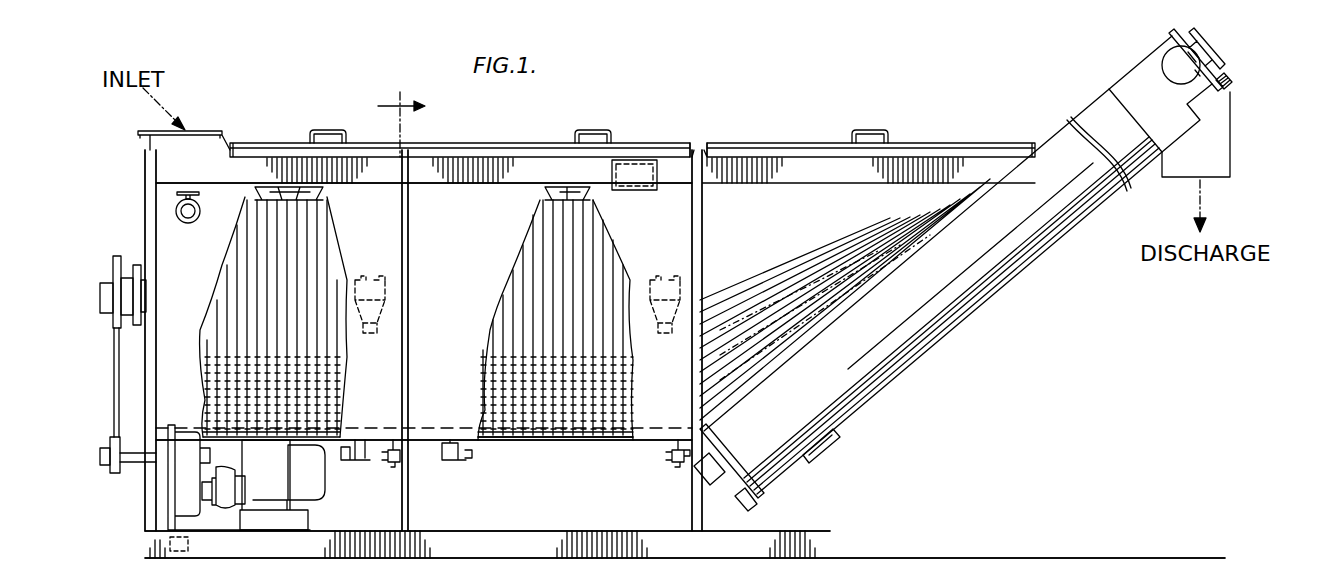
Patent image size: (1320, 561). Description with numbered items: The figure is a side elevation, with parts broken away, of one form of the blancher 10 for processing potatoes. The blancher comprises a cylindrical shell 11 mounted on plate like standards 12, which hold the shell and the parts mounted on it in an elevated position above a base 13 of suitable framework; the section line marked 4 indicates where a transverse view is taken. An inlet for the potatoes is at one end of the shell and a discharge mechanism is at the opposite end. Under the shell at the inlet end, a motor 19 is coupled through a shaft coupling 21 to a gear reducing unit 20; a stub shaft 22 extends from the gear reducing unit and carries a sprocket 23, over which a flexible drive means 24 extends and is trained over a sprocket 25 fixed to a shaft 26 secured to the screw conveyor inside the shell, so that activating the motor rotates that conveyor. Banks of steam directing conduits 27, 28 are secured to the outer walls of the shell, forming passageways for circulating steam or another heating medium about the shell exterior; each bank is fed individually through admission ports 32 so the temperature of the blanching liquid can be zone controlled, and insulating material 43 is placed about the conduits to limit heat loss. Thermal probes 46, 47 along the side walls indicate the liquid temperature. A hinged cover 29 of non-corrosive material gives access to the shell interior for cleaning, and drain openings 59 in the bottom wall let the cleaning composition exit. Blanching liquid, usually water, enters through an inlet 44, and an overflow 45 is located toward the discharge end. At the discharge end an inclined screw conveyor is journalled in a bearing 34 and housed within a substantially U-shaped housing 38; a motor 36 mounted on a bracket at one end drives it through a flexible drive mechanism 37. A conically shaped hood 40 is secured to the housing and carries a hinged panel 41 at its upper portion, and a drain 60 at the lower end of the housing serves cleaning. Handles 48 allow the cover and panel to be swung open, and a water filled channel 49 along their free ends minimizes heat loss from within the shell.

The section line 4 is at (401, 118).
The blancher 10 is at (661, 140).
The cylindrical shell 11 is at (433, 407).
The plate like standards 12 is at (146, 210).
The base 13 is at (791, 530).
The motor 19 is at (310, 486).
The gear reducing unit 20 is at (162, 503).
The shaft coupling 21 is at (207, 508).
The stub shaft 22 is at (140, 459).
The sprocket 23 is at (106, 447).
The flexible drive means 24 is at (113, 382).
The sprocket 25 is at (105, 312).
The shaft 26 is at (133, 280).
The steam directing conduit 27 is at (320, 390).
The steam directing conduit 28 is at (540, 343).
The hinged cover 29 is at (476, 142).
The admission port 32 is at (395, 468).
The bearing 34 is at (712, 478).
The motor 36 is at (1173, 62).
The flexible drive mechanism 37 is at (1234, 69).
The U-shaped housing 38 is at (1007, 278).
The conically shaped hood 40 is at (845, 299).
The panel 41 is at (945, 150).
The insulating material 43 is at (617, 445).
The inlet 44 is at (201, 219).
The overflow 45 is at (650, 170).
The thermal probe 46 is at (370, 292).
The thermal probe 47 is at (660, 292).
The handle 48 is at (313, 130).
The water filled channel 49 is at (716, 155).
The drain opening 59 is at (362, 465).
The drain 60 is at (748, 500).